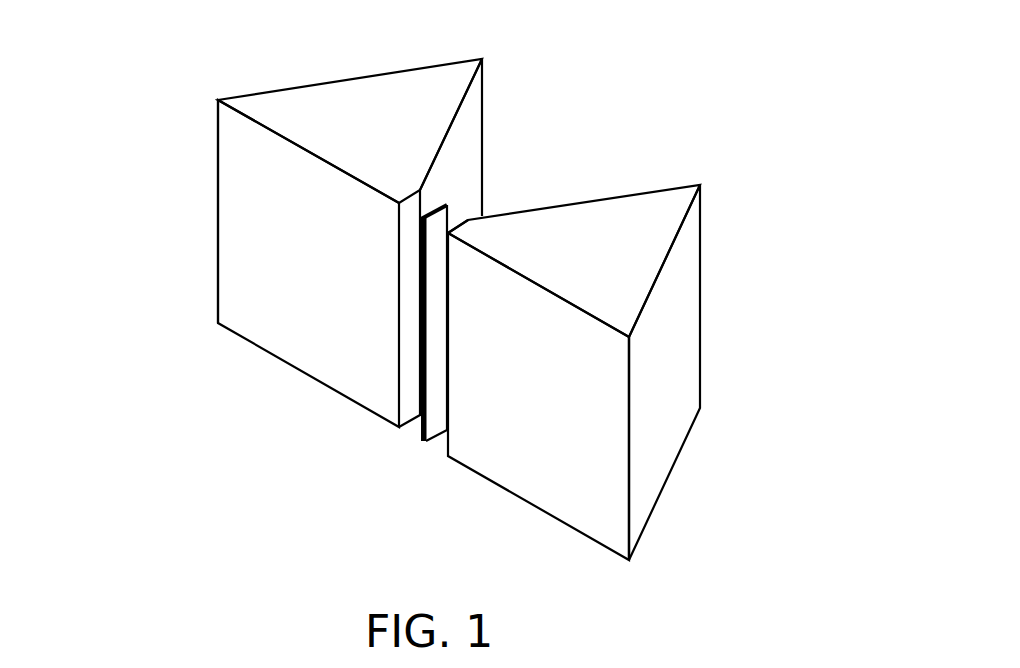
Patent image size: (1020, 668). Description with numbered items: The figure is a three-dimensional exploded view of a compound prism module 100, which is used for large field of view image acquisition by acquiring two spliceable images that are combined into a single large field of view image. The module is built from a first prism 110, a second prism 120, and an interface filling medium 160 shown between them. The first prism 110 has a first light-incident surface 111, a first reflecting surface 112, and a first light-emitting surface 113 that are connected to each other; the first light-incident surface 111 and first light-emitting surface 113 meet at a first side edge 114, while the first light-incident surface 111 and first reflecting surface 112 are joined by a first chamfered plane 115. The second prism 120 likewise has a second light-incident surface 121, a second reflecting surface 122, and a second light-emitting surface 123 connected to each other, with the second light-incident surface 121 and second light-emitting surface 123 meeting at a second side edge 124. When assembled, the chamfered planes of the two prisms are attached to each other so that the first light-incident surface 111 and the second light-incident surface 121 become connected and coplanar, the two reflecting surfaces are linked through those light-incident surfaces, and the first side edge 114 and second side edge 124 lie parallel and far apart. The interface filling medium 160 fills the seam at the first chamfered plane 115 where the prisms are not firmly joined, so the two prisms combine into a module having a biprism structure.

The compound prism module 100 is at (740, 108).
The first prism 110 is at (658, 237).
The first light-incident surface 111 is at (524, 417).
The first reflecting surface 112 is at (614, 194).
The first light-emitting surface 113 is at (689, 379).
The first side edge 114 is at (630, 445).
The first chamfered plane 115 is at (460, 221).
The second prism 120 is at (343, 112).
The second light-incident surface 121 is at (294, 285).
The second reflecting surface 122 is at (473, 139).
The second light-emitting surface 123 is at (346, 77).
The second side edge 124 is at (218, 210).
The interface filling medium 160 is at (425, 442).